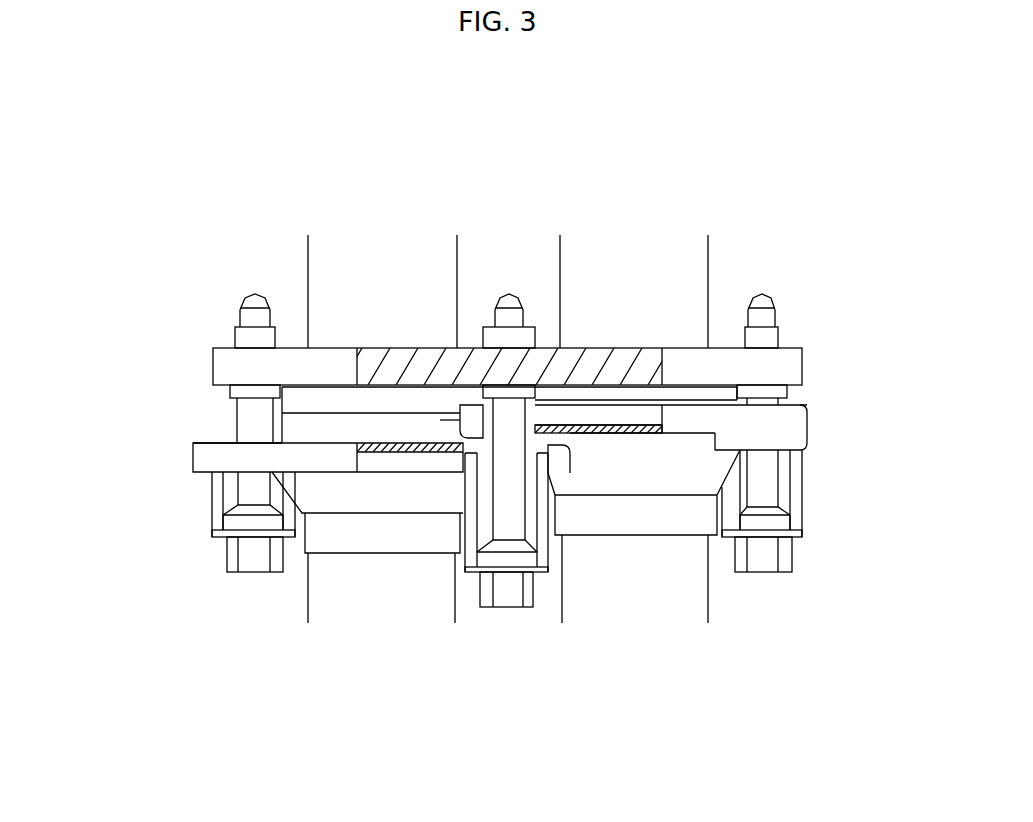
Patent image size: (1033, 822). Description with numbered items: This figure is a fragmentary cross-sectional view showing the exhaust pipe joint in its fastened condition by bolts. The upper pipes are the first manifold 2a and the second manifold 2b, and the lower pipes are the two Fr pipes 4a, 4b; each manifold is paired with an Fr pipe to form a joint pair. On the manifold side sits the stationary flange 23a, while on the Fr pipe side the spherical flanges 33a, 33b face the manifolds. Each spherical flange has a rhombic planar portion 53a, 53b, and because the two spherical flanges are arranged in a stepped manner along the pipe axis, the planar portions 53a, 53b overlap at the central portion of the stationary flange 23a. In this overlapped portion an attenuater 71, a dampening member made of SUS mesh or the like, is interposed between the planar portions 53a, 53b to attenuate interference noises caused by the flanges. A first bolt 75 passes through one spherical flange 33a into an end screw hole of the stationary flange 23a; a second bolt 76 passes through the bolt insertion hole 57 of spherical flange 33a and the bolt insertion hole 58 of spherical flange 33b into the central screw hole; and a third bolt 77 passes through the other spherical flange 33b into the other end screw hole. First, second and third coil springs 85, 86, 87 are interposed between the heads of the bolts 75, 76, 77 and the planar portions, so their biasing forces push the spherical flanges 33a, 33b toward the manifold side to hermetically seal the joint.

The first manifold 2a is at (307, 272).
The second manifold 2b is at (708, 267).
The Fr pipe 4a is at (306, 600).
The Fr pipe 4b is at (713, 593).
The stationary flange 23a is at (530, 308).
The bolt insertion hole 58 is at (545, 422).
The rhombic planar portion 53a is at (397, 450).
The rhombic planar portion 53b is at (600, 437).
The bolt insertion hole 57 is at (565, 475).
The attenuater 71 is at (437, 452).
The first bolt 75 is at (235, 422).
The second bolt 76 is at (508, 607).
The third bolt 77 is at (780, 472).
The first coil spring 85 is at (212, 507).
The second coil spring 86 is at (467, 533).
The third coil spring 87 is at (807, 507).
The spherical flange 33a is at (303, 545).
The spherical flange 33b is at (678, 477).